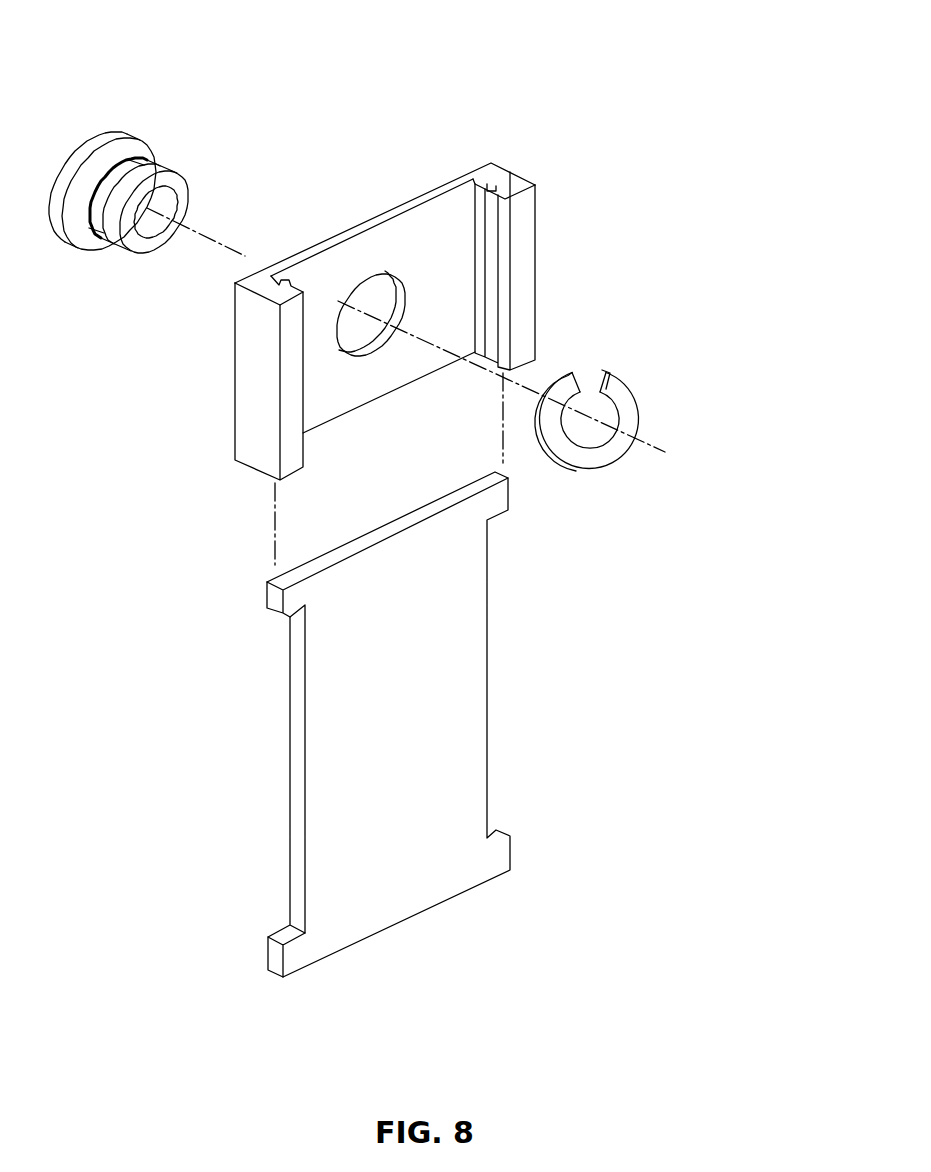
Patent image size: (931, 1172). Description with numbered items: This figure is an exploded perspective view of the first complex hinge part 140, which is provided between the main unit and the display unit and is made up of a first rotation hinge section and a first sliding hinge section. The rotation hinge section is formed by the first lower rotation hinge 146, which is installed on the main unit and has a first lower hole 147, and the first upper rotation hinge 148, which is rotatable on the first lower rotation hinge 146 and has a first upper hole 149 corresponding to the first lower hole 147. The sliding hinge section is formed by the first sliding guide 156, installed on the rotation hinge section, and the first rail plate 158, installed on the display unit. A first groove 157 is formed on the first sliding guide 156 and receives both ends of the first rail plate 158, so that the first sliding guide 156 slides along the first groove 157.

The first complex hinge part 140 is at (112, 35).
The first lower rotation hinge 146 is at (150, 148).
The first lower hole 147 is at (167, 200).
The first upper rotation hinge 148 is at (608, 376).
The first upper hole 149 is at (627, 384).
The first sliding guide 156 is at (478, 296).
The first groove 157 is at (500, 183).
The first rail plate 158 is at (470, 686).